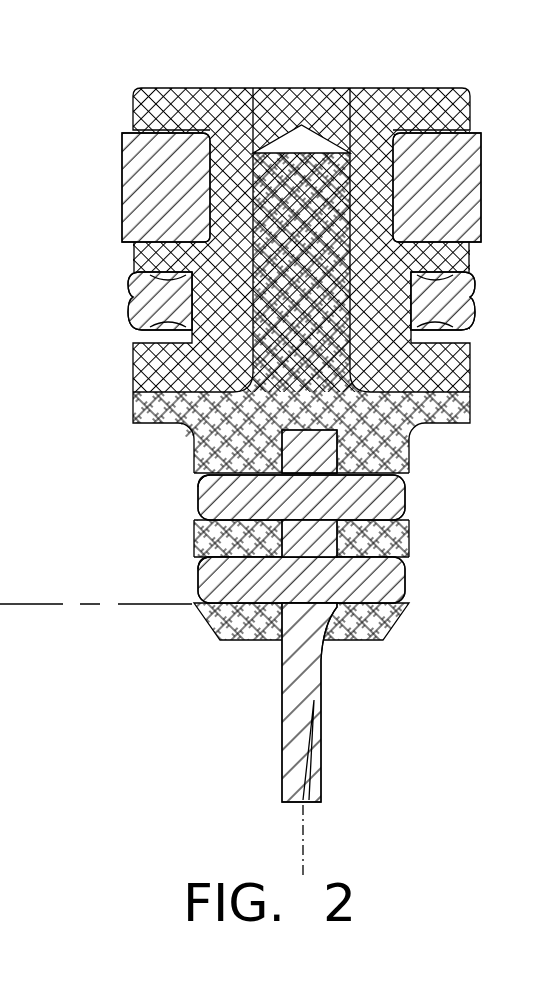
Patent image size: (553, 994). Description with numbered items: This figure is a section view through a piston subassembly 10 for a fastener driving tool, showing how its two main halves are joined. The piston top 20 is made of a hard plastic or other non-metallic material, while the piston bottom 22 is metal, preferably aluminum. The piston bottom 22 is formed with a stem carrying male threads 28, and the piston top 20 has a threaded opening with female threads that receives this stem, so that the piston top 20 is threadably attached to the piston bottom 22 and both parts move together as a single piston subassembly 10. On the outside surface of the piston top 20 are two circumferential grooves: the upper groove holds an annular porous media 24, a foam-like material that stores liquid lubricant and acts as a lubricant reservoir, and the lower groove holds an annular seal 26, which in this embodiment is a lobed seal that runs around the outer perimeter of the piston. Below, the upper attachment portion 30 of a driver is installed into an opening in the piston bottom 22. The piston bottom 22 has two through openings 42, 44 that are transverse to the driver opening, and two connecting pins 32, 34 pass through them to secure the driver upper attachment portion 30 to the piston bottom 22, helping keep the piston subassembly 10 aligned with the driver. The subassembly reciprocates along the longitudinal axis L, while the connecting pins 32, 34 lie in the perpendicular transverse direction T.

The piston subassembly 10 is at (104, 84).
The piston top 20 is at (418, 101).
The piston bottom 22 is at (440, 425).
The porous media 24 is at (452, 168).
The annular seal 26 is at (467, 278).
The male threads 28 is at (365, 88).
The upper attachment portion 30 is at (313, 702).
The connecting pin 32 is at (383, 505).
The connecting pin 34 is at (383, 592).
The through opening 42 is at (205, 478).
The through opening 44 is at (200, 562).
The transverse direction T is at (50, 603).
The longitudinal axis L is at (303, 822).